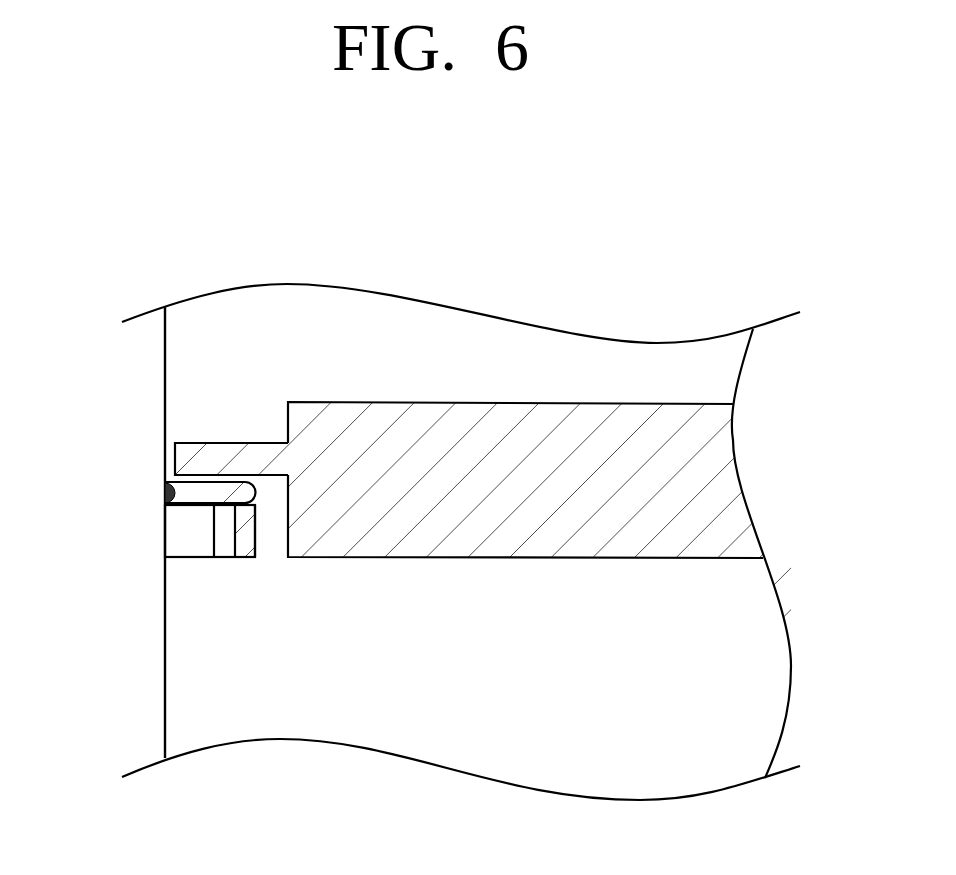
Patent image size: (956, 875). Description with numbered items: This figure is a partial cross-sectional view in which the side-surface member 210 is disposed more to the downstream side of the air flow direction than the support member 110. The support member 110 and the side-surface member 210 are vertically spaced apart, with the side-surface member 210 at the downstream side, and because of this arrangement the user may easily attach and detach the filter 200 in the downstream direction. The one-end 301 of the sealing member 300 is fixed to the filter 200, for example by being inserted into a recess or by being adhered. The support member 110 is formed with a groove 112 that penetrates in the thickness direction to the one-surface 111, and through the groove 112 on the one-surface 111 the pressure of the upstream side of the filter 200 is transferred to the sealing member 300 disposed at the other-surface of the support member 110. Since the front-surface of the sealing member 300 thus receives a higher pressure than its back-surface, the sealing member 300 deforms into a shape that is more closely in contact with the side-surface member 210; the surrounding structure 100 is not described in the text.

The first body (housing) 100 is at (155, 363).
The support member 110 is at (191, 548).
The one-surface 111 is at (255, 576).
The groove 112 is at (223, 553).
The filter 200 is at (592, 415).
The side-surface member 210 is at (183, 456).
The sealing member 300 is at (233, 487).
The one-end 301 is at (164, 491).